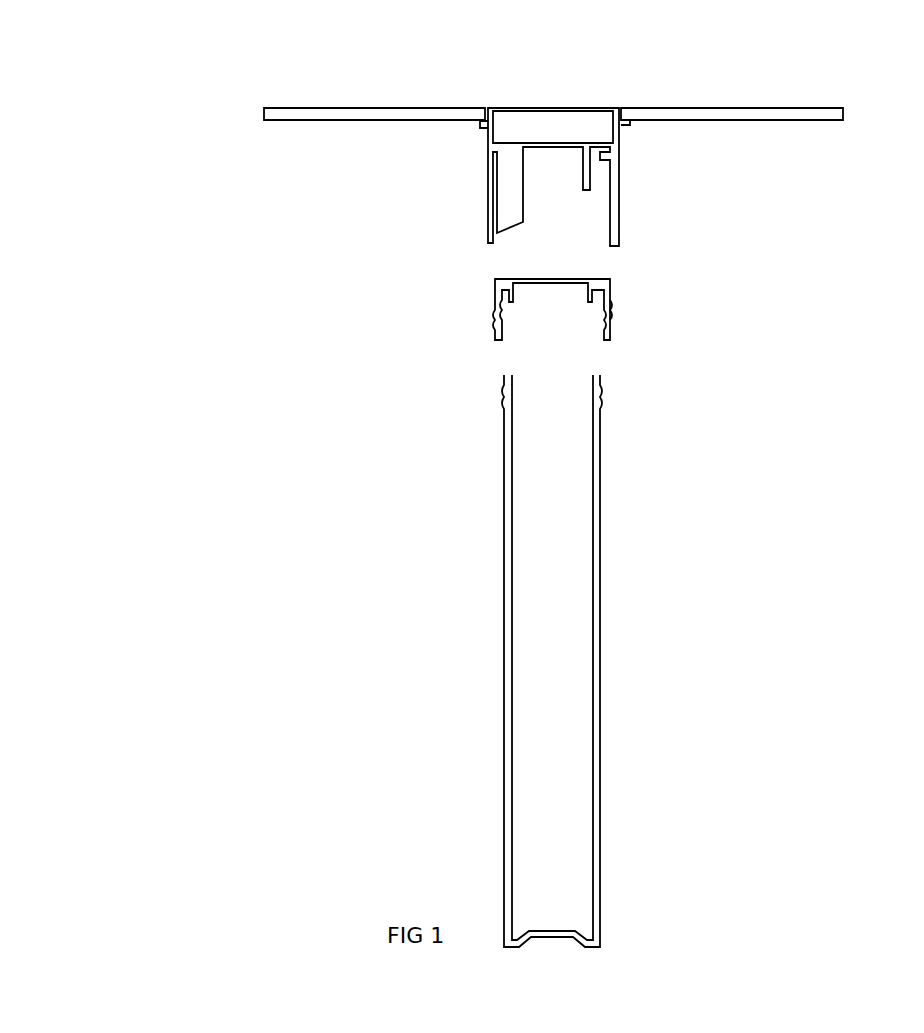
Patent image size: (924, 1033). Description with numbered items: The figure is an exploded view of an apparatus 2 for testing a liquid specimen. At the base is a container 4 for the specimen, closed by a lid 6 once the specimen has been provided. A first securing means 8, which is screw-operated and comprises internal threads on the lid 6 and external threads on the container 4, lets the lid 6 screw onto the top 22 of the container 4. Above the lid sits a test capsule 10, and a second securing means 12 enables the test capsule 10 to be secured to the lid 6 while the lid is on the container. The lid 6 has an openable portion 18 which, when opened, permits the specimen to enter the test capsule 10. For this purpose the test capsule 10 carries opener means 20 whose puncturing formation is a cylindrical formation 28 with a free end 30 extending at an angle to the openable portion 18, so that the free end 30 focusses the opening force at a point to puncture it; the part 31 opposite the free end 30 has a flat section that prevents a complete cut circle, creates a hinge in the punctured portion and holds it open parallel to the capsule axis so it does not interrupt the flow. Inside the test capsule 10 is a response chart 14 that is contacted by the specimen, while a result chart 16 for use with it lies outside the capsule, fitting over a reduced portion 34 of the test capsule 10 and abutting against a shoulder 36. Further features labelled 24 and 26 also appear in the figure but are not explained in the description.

The apparatus 2 is at (231, 225).
The container 4 is at (608, 660).
The lid 6 is at (601, 291).
The first securing means 8 is at (487, 329).
The test capsule 10 is at (608, 140).
The second securing means 12 is at (478, 225).
The response chart 14 is at (525, 110).
The result chart 16 is at (792, 127).
The openable portion 18 is at (565, 280).
The opener means 20 is at (505, 183).
The top of the container 22 is at (502, 390).
The bracket lug 24 is at (496, 340).
The outer leg 26 is at (617, 213).
The cylindrical formation 28 is at (587, 184).
The free end 30 is at (525, 223).
The part opposite the free end 31 is at (584, 192).
The reduced portion 34 is at (619, 108).
The shoulder 36 is at (628, 123).